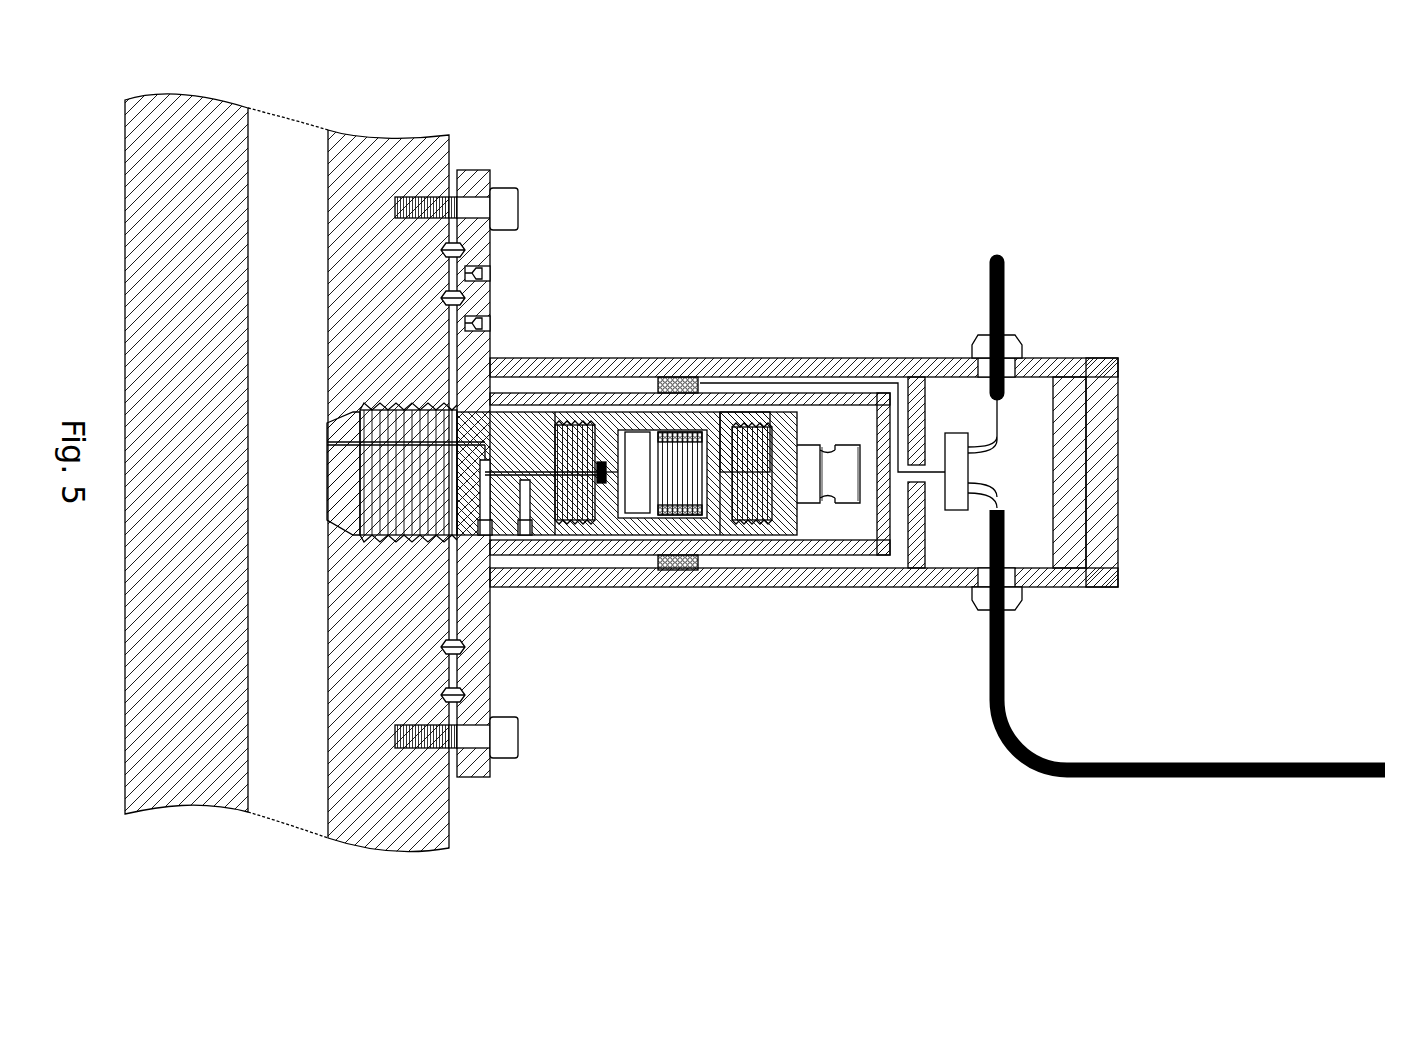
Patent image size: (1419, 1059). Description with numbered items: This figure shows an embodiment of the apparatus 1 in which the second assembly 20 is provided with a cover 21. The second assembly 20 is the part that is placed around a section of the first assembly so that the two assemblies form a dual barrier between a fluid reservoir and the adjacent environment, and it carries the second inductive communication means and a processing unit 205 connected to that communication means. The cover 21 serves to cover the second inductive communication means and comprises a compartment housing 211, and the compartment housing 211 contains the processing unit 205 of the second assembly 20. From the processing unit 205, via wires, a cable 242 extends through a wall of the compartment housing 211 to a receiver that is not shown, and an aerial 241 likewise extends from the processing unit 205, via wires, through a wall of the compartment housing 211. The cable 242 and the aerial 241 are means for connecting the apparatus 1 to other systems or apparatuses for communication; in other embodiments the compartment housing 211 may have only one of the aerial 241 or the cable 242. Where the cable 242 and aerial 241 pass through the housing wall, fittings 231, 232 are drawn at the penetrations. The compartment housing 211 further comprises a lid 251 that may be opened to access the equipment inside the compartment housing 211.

The apparatus 1 is at (472, 125).
The second assembly 20 is at (825, 650).
The cover 21 is at (1128, 617).
The processing unit 205 is at (955, 425).
The compartment housing 211 is at (1138, 565).
The upper cable gland nut 231 is at (1022, 347).
The lower cable gland nut 232 is at (1022, 598).
The aerial 241 is at (1006, 272).
The cable 242 is at (1007, 672).
The lid 251 is at (1118, 407).